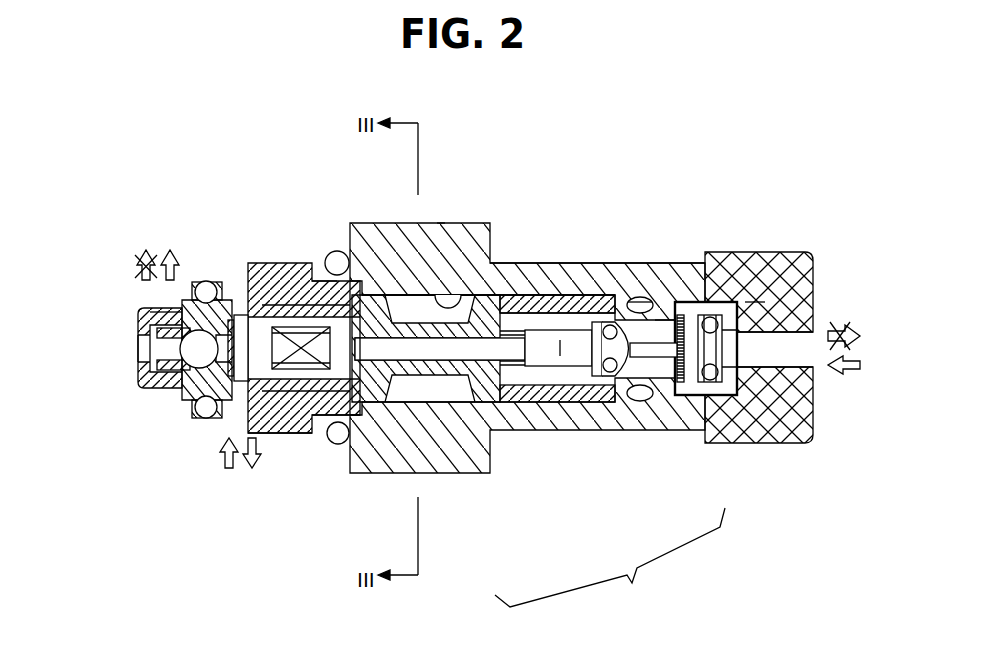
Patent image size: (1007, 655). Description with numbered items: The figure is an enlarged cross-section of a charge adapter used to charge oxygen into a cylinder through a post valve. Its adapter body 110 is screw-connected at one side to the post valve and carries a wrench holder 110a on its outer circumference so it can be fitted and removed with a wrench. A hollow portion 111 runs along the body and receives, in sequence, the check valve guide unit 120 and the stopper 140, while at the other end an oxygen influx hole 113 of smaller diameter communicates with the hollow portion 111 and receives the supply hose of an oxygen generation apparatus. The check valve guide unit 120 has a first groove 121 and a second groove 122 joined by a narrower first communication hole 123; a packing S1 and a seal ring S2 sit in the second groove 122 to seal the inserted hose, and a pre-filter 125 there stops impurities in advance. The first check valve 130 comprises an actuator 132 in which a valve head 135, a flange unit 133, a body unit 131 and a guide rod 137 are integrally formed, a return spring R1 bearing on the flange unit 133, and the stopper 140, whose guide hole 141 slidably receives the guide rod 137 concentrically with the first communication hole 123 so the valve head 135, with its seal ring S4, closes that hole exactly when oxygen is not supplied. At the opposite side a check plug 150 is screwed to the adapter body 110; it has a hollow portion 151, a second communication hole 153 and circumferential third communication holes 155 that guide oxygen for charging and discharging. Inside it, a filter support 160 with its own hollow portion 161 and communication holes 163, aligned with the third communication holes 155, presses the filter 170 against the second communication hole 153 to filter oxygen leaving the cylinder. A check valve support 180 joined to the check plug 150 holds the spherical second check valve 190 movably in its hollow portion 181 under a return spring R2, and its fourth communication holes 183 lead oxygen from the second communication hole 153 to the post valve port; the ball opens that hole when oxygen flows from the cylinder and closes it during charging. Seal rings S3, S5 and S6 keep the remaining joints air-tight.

The adapter body 110 is at (515, 262).
The wrench holder 110a is at (437, 223).
The hollow portion 111 is at (478, 297).
The oxygen influx hole 113 is at (812, 332).
The check valve guide unit 120 is at (592, 268).
The first groove 121 is at (553, 315).
The second groove 122 is at (808, 283).
The first communication hole 123 is at (688, 300).
The pre-filter 125 is at (713, 300).
The first check valve 130 is at (537, 380).
The body unit 131 is at (552, 352).
The actuator 132 is at (610, 563).
The flange unit 133 is at (617, 400).
The valve head 135 is at (652, 400).
The guide rod 137 is at (455, 378).
The stopper 140 is at (354, 250).
The guide hole 141 is at (382, 255).
The check plug 150 is at (225, 288).
The hollow portion 151 is at (300, 292).
The second communication hole 153 is at (177, 372).
The third communication holes 155 is at (262, 427).
The filter support 160 is at (255, 270).
The hollow portion 161 is at (326, 418).
The communication holes 163 is at (288, 420).
The filter 170 is at (222, 405).
The check valve support 180 is at (138, 380).
The hollow portion 181 is at (167, 337).
The fourth communication holes 183 is at (170, 316).
The second check valve 190 is at (180, 350).
The return spring R1 is at (572, 352).
The return spring R2 is at (170, 368).
The packing S1 is at (725, 365).
The seal ring S2 is at (755, 290).
The seal ring S3 is at (655, 312).
The seal ring S4 is at (640, 302).
The seal ring S5 is at (343, 258).
The seal ring S6 is at (198, 282).